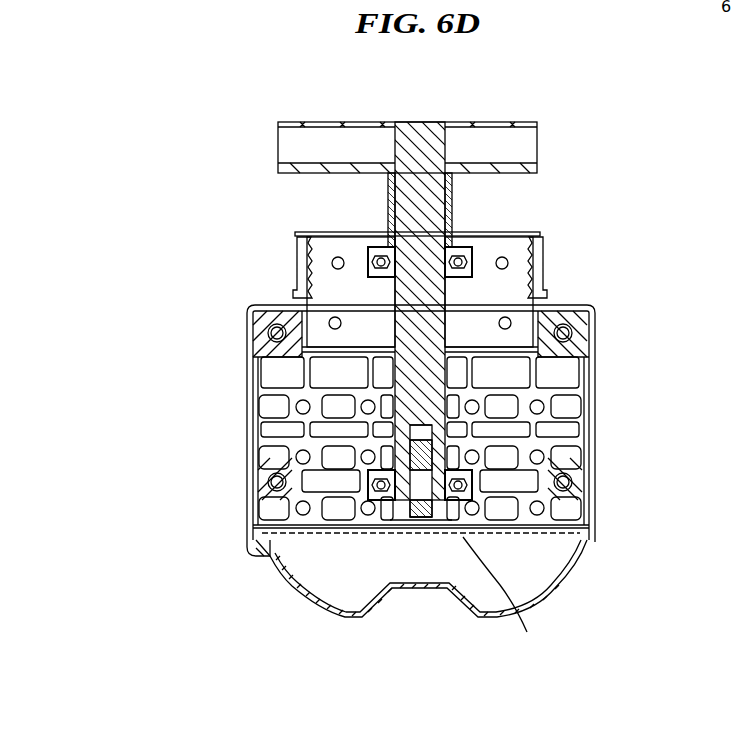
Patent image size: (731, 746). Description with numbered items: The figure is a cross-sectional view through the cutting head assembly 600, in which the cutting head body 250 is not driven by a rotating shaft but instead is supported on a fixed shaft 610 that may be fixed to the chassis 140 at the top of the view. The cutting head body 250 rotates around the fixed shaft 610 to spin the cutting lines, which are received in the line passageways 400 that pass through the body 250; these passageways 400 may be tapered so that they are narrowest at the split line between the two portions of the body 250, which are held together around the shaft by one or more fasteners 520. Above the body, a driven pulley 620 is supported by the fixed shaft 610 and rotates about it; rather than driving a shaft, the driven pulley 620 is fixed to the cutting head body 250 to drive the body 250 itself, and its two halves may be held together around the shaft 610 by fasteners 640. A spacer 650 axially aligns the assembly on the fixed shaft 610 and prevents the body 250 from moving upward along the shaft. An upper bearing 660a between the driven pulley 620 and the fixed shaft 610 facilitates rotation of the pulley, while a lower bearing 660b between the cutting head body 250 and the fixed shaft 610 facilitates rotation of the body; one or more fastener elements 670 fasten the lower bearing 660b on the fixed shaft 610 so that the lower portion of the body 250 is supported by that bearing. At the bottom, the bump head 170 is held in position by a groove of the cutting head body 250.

The cutting head assembly 600 is at (198, 114).
The chassis 140 is at (278, 122).
The fixed shaft 610 is at (442, 121).
The spacer 650 is at (452, 213).
The driven pulley 620 is at (545, 233).
The fasteners 640 is at (332, 265).
The upper bearing 660a is at (474, 263).
The lower bearing 660b is at (474, 482).
The fasteners 520 is at (268, 333).
The line passageways 400 is at (362, 458).
The cutting head body 250 is at (246, 516).
The bump head 170 is at (322, 610).
The fastener elements 670 is at (505, 601).